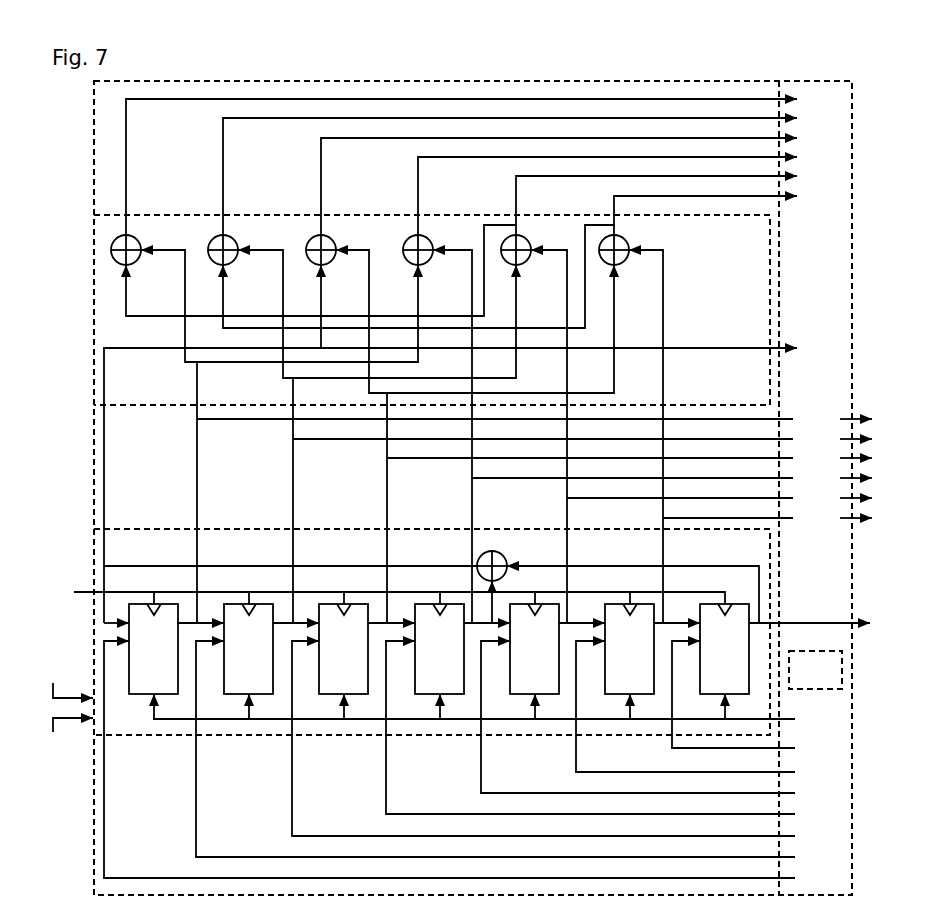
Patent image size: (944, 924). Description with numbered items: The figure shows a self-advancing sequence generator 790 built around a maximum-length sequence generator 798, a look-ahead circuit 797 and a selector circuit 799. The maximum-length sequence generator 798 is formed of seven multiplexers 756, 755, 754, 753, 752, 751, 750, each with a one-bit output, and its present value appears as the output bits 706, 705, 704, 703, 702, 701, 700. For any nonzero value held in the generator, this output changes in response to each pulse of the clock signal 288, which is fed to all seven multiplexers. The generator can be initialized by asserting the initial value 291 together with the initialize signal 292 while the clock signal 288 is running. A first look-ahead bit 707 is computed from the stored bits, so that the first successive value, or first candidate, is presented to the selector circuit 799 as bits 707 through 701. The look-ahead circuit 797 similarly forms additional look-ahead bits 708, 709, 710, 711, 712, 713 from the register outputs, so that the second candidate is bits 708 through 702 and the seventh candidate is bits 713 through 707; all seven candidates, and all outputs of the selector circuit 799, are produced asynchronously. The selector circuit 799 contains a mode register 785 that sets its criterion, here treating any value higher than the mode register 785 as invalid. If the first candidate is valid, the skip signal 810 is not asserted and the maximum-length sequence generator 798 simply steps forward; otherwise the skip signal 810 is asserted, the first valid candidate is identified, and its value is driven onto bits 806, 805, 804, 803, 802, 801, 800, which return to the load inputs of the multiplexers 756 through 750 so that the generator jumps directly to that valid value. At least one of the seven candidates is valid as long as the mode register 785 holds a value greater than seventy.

The output bit 700 is at (688, 595).
The output bit 701 is at (750, 436).
The output bit 702 is at (701, 436).
The output bit 703 is at (652, 436).
The output bit 704 is at (604, 436).
The output bit 705 is at (555, 436).
The output bit 706 is at (506, 436).
The look-ahead bit 707 is at (473, 444).
The look-ahead bit 708 is at (728, 210).
The look-ahead bit 709 is at (679, 200).
The look-ahead bit 710 is at (630, 190).
The look-ahead bit 711 is at (582, 181).
The look-ahead bit 712 is at (533, 171).
The look-ahead bit 713 is at (484, 161).
The multiplexer 750 is at (744, 661).
The multiplexer 751 is at (649, 661).
The multiplexer 752 is at (554, 661).
The multiplexer 753 is at (459, 661).
The multiplexer 754 is at (363, 661).
The multiplexer 755 is at (268, 661).
The multiplexer 756 is at (173, 661).
The mode register 785 is at (835, 681).
The self-advancing sequence generator 790 is at (811, 59).
The look-ahead circuit 797 is at (743, 248).
The maximum-length sequence generator 798 is at (742, 560).
The selector circuit 799 is at (836, 281).
The selected value bit 800 is at (755, 701).
The selected value bit 801 is at (707, 713).
The selected value bit 802 is at (659, 723).
The selected value bit 803 is at (612, 734).
The selected value bit 804 is at (565, 745).
The selected value bit 805 is at (517, 755).
The selected value bit 806 is at (471, 766).
The skip signal 810 is at (496, 713).
The clock signal 288 is at (380, 593).
The initial value 291 is at (64, 679).
The initialize signal 292 is at (64, 738).